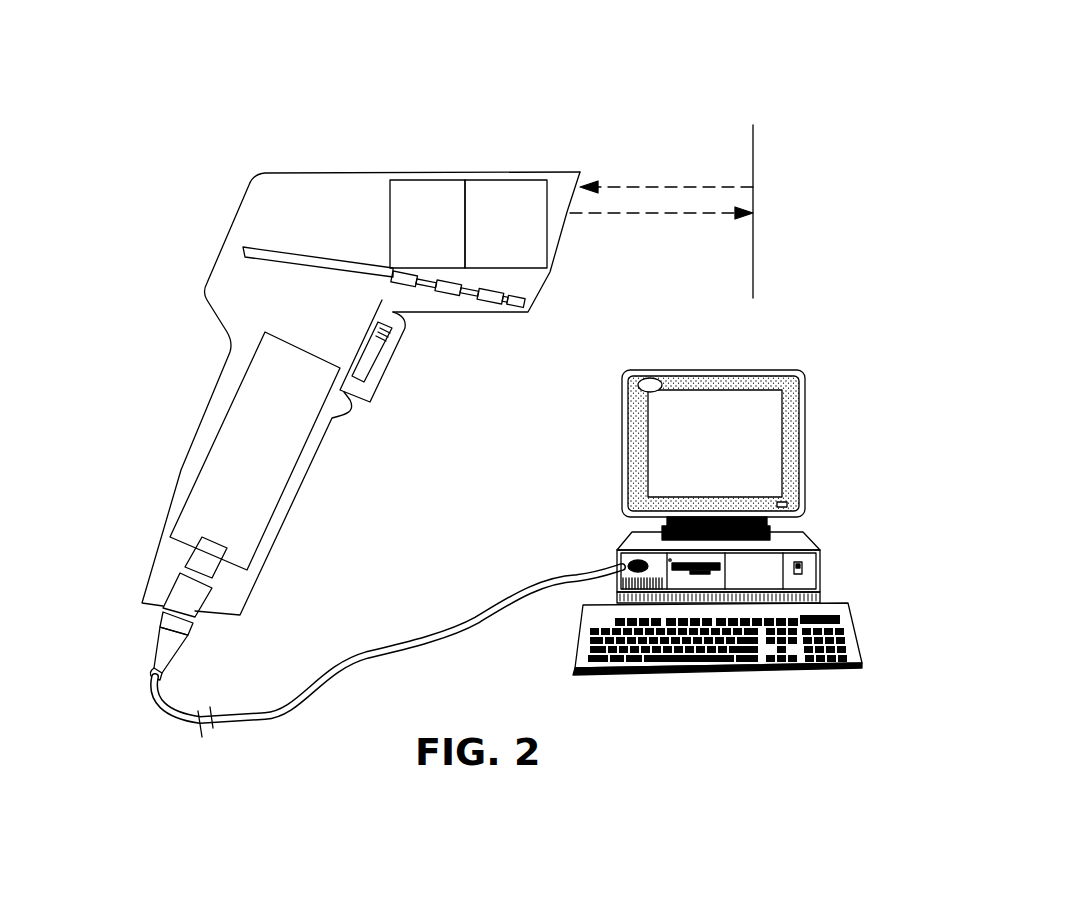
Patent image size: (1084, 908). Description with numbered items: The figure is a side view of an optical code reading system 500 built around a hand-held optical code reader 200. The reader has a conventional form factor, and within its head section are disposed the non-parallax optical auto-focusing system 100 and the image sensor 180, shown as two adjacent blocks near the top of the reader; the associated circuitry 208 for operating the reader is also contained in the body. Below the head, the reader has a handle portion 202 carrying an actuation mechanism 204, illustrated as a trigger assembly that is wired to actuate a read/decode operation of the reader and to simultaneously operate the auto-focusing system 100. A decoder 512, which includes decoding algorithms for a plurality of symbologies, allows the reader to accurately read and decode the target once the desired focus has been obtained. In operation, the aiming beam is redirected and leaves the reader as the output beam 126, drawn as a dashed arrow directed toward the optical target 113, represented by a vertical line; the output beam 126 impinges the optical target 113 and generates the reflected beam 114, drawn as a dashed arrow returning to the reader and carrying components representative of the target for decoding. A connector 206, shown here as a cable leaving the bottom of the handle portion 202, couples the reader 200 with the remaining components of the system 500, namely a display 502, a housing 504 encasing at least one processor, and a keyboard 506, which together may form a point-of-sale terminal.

The optical code reading system 500 is at (485, 29).
The optical code reader 200 is at (203, 148).
The associated circuitry 208 is at (318, 175).
The image sensor 180 is at (430, 180).
The non-parallax optical auto-focusing system 100 is at (508, 180).
The reflected beam 114 is at (658, 187).
The optical target 113 is at (753, 162).
The output beam 126 is at (663, 213).
The decoder 512 is at (490, 300).
The actuation mechanism 204 is at (377, 377).
The handle portion 202 is at (190, 450).
The connector 206 is at (173, 657).
The display 502 is at (805, 410).
The housing 504 is at (827, 573).
The keyboard 506 is at (855, 630).